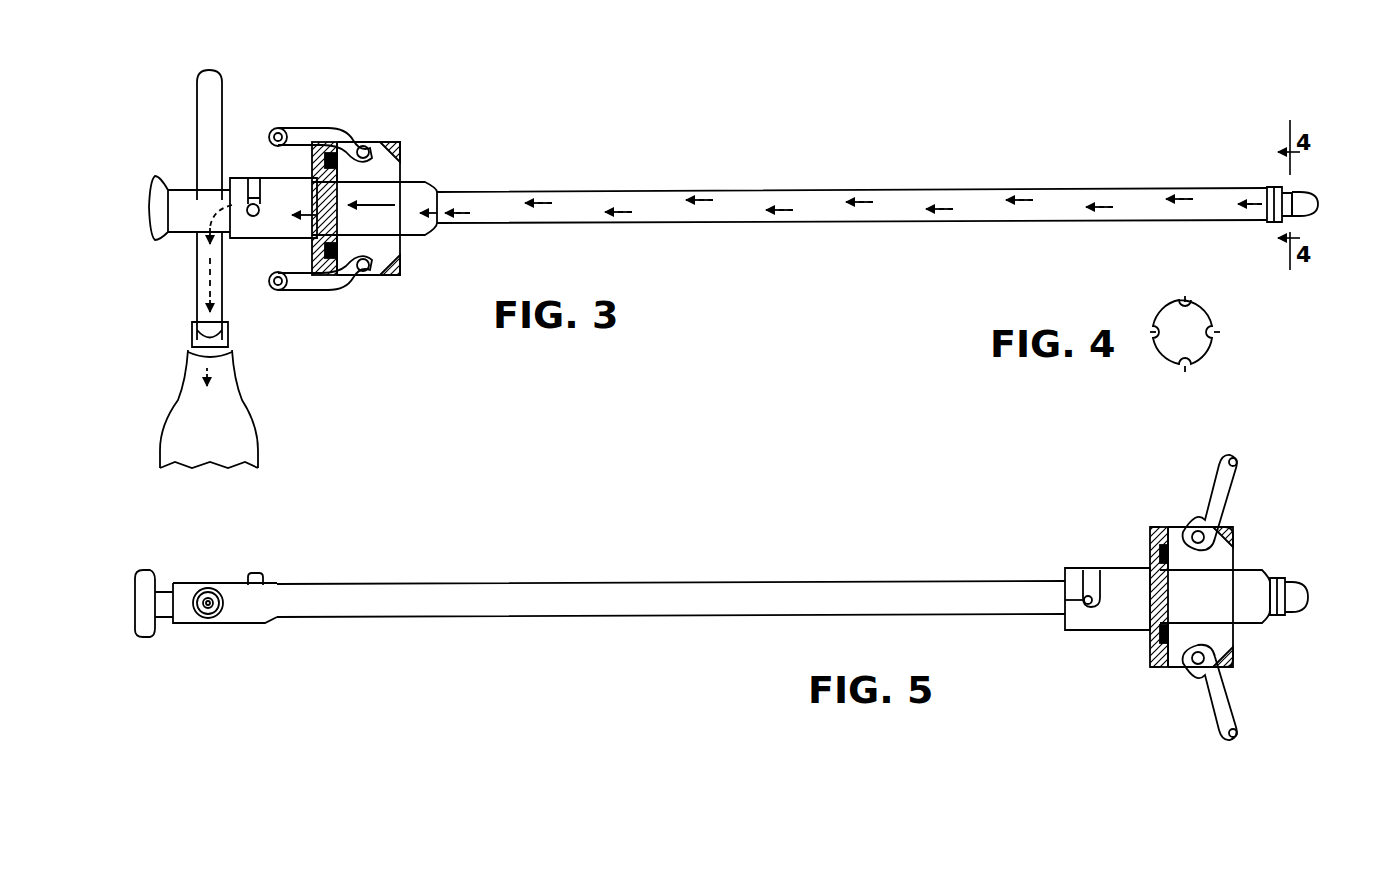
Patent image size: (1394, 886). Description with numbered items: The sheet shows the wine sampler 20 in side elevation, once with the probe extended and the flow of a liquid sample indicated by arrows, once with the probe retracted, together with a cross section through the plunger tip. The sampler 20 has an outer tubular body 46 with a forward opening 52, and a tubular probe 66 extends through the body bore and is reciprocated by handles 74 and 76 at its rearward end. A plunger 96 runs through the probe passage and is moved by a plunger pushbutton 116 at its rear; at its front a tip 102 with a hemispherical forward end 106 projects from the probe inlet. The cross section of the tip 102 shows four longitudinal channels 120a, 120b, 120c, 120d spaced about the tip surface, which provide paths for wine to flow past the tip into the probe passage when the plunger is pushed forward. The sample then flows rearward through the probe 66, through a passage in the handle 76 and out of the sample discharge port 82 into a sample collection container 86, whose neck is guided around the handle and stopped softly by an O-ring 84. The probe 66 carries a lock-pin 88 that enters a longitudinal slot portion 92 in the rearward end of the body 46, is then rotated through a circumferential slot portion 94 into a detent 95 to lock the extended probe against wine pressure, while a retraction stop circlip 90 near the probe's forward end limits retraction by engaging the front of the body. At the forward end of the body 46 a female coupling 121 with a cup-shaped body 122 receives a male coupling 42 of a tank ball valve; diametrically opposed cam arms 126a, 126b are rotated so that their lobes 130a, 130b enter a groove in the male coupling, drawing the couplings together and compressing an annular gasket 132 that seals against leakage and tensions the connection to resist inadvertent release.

In FIG. 3, the sampler 20 is at (600, 78).
In FIG. 5, the sampler 20 is at (646, 490).
In FIG. 3, the handle 74 is at (197, 90).
In FIG. 3, the handle 76 is at (200, 272).
In FIG. 5, the handle 76 is at (206, 615).
In FIG. 3, the plunger pushbutton 116 is at (152, 182).
In FIG. 5, the plunger pushbutton 116 is at (143, 627).
In FIG. 3, the outer tubular body 46 is at (287, 236).
In FIG. 5, the outer tubular body 46 is at (1085, 632).
In FIG. 3, the lock-pin 88 is at (252, 203).
In FIG. 5, the lock-pin 88 is at (262, 573).
In FIG. 3, the circumferential slot portion 94 is at (255, 202).
In FIG. 5, the circumferential slot portion 94 is at (1095, 570).
In FIG. 3, the detent 95 is at (248, 212).
In FIG. 5, the detent 95 is at (1085, 602).
In FIG. 3, the cup-shaped body 122 is at (380, 150).
In FIG. 5, the cup-shaped body 122 is at (1176, 668).
In FIG. 3, the male coupling 42 is at (398, 170).
In FIG. 3, the forward opening 52 is at (432, 188).
In FIG. 3, the tubular probe 66 is at (1128, 188).
In FIG. 5, the tubular probe 66 is at (460, 617).
In FIG. 3, the cam arm 126a is at (330, 128).
In FIG. 5, the cam arm 126a is at (1242, 470).
In FIG. 3, the cam arm 126b is at (325, 292).
In FIG. 5, the cam arm 126b is at (1232, 695).
In FIG. 3, the cam arm lobe 130a is at (366, 145).
In FIG. 5, the cam arm lobe 130a is at (1195, 523).
In FIG. 3, the cam arm lobe 130b is at (372, 280).
In FIG. 5, the cam arm lobe 130b is at (1192, 672).
In FIG. 3, the retraction stop circlip 90 is at (1270, 186).
In FIG. 5, the retraction stop circlip 90 is at (1275, 580).
In FIG. 3, the hemispherical forward end 106 is at (1320, 204).
In FIG. 5, the hemispherical forward end 106 is at (1310, 593).
In FIG. 4, the channel 120a is at (1184, 297).
In FIG. 4, the channel 120b is at (1222, 333).
In FIG. 4, the channel 120c is at (1186, 368).
In FIG. 3, the channel 120d is at (1296, 188).
In FIG. 4, the channel 120d is at (1150, 333).
In FIG. 4, the tip 102 is at (1190, 322).
In FIG. 3, the O-ring 84 is at (228, 332).
In FIG. 5, the O-ring 84 is at (200, 618).
In FIG. 3, the sample collection container 86 is at (250, 418).
In FIG. 5, the plunger 96 is at (165, 595).
In FIG. 5, the sample discharge port 82 is at (214, 610).
In FIG. 5, the longitudinal slot portion 92 is at (1087, 572).
In FIG. 5, the compressible annular gasket 132 is at (1150, 665).
In FIG. 5, the female coupling 121 is at (1262, 508).